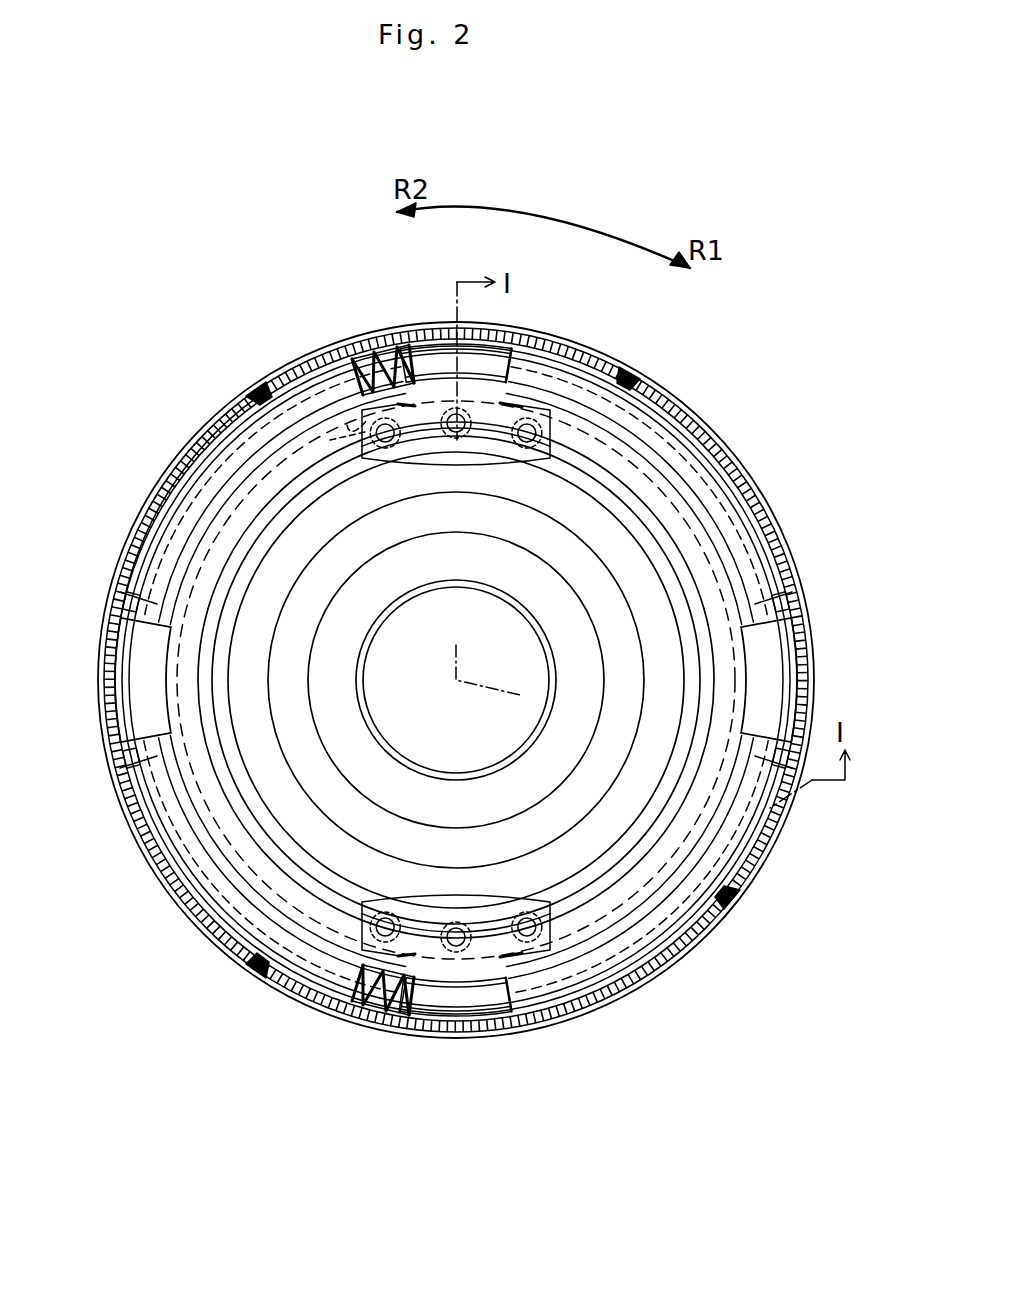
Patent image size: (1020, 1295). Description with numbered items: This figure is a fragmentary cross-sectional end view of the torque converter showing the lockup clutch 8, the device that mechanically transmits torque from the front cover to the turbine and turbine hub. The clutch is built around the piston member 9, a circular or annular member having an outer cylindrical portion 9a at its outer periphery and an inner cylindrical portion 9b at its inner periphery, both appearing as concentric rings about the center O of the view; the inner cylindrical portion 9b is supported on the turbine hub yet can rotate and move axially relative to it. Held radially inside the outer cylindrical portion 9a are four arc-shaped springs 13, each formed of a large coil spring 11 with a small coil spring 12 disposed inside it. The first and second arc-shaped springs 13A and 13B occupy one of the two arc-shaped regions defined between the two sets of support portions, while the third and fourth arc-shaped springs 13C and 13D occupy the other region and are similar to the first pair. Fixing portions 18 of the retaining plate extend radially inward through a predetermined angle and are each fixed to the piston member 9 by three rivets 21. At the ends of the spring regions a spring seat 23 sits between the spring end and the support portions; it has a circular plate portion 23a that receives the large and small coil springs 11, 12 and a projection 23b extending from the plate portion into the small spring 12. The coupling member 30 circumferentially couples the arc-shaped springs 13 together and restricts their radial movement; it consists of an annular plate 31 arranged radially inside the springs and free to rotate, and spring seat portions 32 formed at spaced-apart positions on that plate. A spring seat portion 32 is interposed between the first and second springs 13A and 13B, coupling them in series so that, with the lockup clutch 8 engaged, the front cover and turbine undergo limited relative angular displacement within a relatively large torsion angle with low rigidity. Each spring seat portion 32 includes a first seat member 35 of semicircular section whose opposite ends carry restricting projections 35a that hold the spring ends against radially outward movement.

The lockup clutch 8 is at (737, 213).
The piston member 9 is at (290, 527).
The outer cylindrical portion 9a is at (185, 470).
The inner cylindrical portion 9b is at (385, 618).
The rotation center O is at (456, 680).
The large coil spring 11 is at (365, 415).
The small coil spring 12 is at (378, 405).
The arc-shaped spring 13 is at (421, 331).
The first arc-shaped spring 13A is at (628, 383).
The second arc-shaped spring 13B is at (726, 902).
The third arc-shaped spring 13C is at (258, 965).
The fourth arc-shaped spring 13D is at (263, 393).
The fixing portion 18 is at (452, 350).
The rivet 21 is at (367, 420).
The spring seat 23 is at (428, 397).
The circular plate portion 23a is at (399, 1012).
The projection 23b is at (362, 990).
The coupling member 30 is at (700, 490).
The annular plate 31 is at (625, 470).
The spring seat portion 32 is at (803, 608).
The first seat member 35 is at (778, 660).
The restricting projection 35a is at (768, 600).